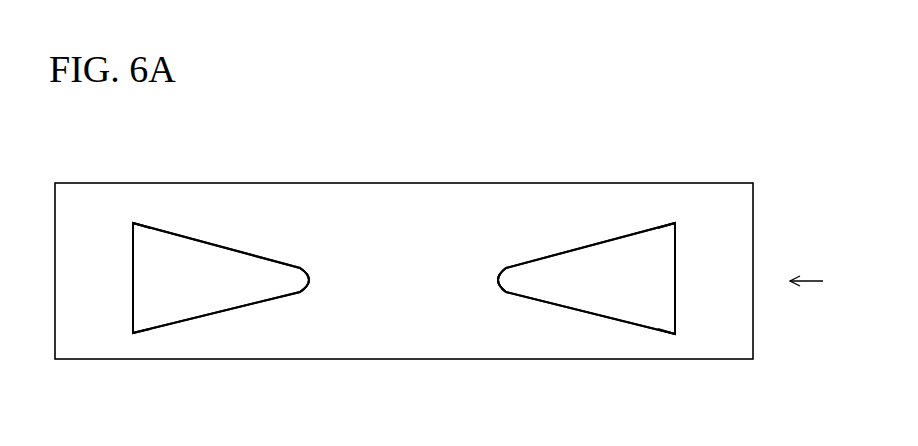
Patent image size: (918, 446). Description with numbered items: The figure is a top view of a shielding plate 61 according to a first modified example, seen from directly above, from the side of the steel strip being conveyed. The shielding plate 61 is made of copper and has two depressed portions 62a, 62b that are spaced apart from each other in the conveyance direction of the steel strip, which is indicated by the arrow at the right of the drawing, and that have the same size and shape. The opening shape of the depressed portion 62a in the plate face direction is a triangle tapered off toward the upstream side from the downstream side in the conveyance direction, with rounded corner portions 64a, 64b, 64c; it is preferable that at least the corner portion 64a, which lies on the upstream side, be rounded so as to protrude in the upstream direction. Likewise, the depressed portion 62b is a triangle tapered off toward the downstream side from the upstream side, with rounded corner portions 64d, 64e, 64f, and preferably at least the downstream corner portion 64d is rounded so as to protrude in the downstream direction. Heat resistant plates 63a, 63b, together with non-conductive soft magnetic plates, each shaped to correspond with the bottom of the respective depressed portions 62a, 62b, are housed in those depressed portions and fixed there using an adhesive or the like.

The shielding plate 61 is at (404, 196).
The depressed portion 62a is at (254, 243).
The depressed portion 62b is at (554, 243).
The heat resistant plate 63a is at (207, 268).
The heat resistant plate 63b is at (602, 268).
The corner portion 64a is at (312, 278).
The corner portion 64b is at (132, 221).
The corner portion 64c is at (131, 335).
The corner portion 64d is at (496, 281).
The corner portion 64e is at (677, 221).
The corner portion 64f is at (678, 336).